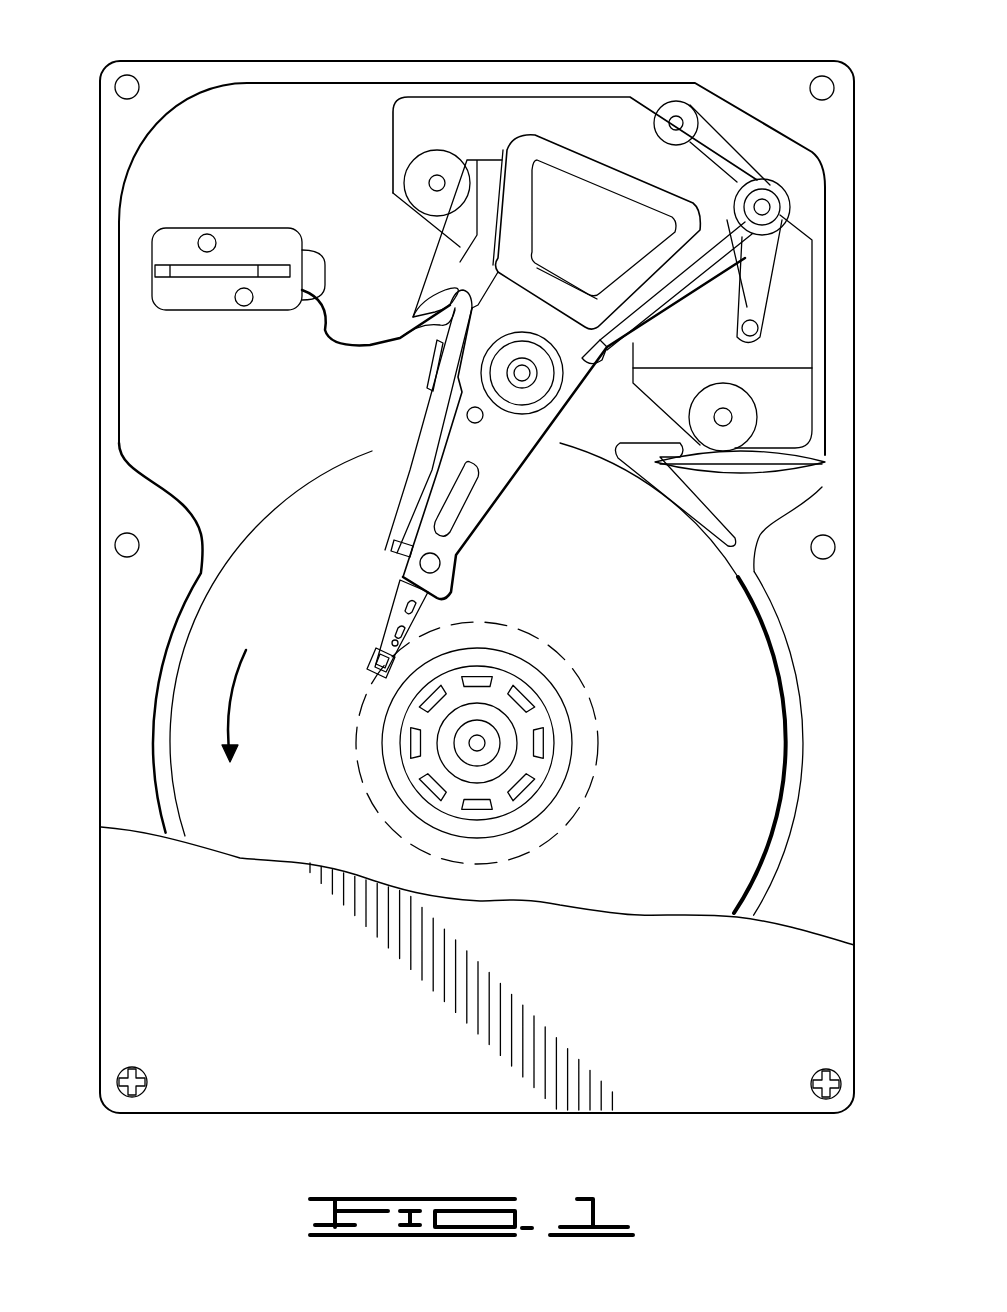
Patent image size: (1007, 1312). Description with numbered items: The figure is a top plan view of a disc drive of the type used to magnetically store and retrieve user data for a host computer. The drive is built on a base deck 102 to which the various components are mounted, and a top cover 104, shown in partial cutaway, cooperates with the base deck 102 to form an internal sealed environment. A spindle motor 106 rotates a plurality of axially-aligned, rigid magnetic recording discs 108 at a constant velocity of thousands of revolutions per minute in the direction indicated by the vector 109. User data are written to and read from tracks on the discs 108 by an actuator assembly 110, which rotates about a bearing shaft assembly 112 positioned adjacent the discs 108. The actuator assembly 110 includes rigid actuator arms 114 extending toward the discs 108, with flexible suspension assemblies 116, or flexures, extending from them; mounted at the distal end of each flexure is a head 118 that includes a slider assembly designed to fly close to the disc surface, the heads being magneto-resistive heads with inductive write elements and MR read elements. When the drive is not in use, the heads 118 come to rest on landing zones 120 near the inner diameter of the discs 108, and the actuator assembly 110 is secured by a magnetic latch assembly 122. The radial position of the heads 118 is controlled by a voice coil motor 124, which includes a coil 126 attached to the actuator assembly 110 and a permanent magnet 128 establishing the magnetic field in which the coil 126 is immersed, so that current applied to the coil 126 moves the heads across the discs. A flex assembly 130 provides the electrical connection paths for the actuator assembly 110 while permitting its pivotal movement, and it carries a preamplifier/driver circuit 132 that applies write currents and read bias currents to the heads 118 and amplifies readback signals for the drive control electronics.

The base deck 102 is at (158, 393).
The top cover 104 is at (155, 905).
The spindle motor 106 is at (530, 722).
The magnetic recording discs 108 is at (768, 760).
The vector 109 is at (262, 715).
The actuator assembly 110 is at (484, 454).
The bearing shaft assembly 112 is at (530, 385).
The actuator arms 114 is at (475, 520).
The flexible suspension assemblies 116 is at (392, 616).
The head 118 is at (383, 660).
The landing zones 120 is at (568, 655).
The magnetic latch assembly 122 is at (720, 150).
The voice coil motor 124 is at (545, 112).
The coil 126 is at (650, 262).
The permanent magnet 128 is at (718, 352).
The flex assembly 130 is at (352, 340).
The preamplifier/driver circuit 132 is at (425, 365).